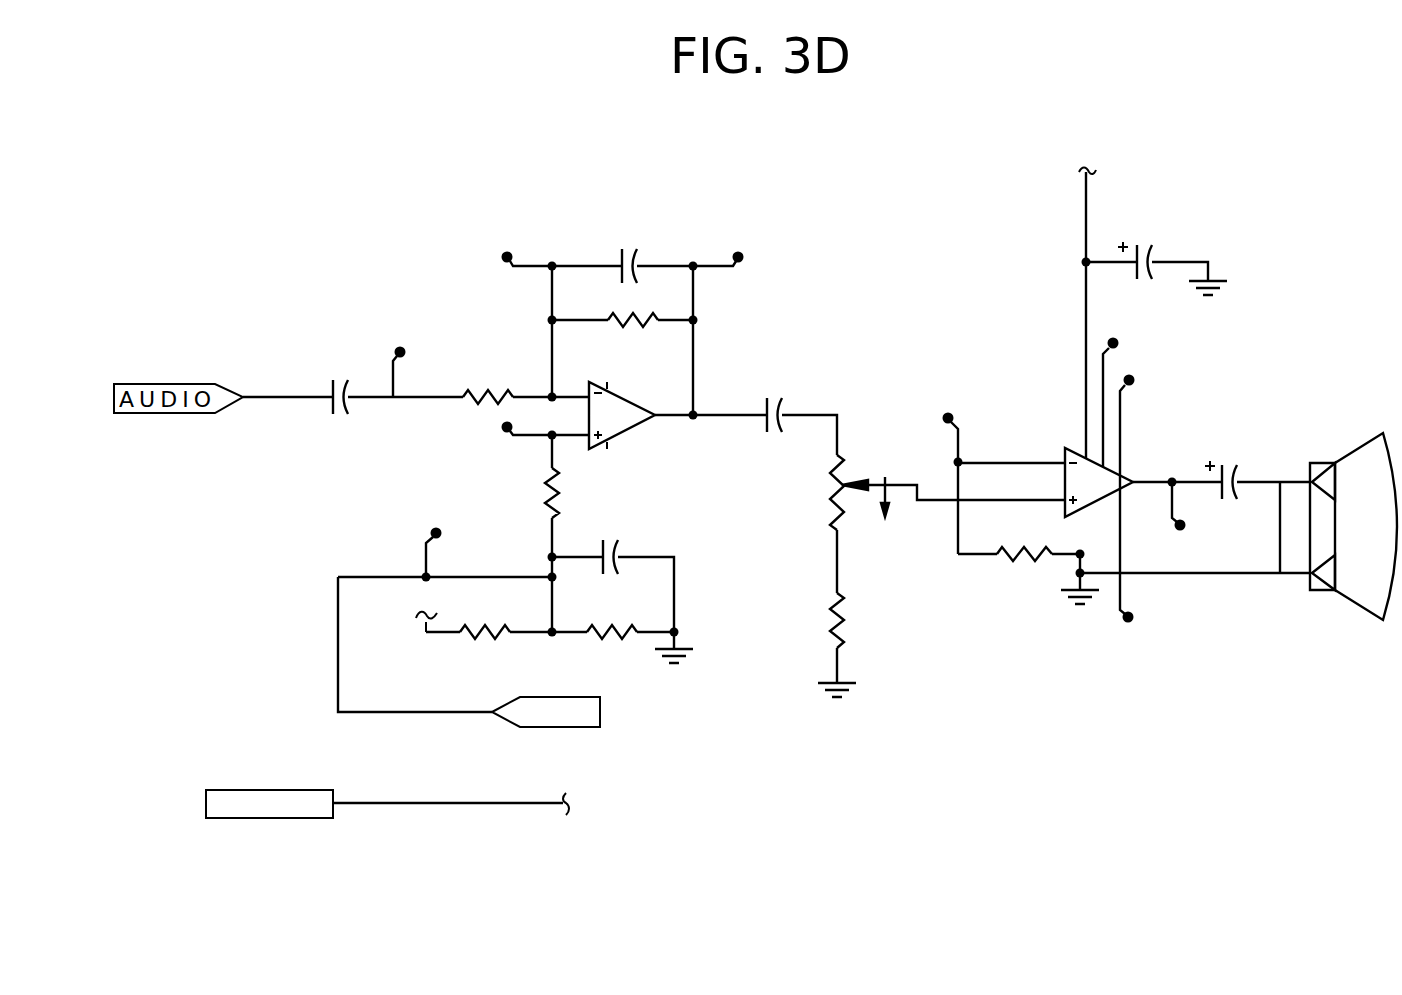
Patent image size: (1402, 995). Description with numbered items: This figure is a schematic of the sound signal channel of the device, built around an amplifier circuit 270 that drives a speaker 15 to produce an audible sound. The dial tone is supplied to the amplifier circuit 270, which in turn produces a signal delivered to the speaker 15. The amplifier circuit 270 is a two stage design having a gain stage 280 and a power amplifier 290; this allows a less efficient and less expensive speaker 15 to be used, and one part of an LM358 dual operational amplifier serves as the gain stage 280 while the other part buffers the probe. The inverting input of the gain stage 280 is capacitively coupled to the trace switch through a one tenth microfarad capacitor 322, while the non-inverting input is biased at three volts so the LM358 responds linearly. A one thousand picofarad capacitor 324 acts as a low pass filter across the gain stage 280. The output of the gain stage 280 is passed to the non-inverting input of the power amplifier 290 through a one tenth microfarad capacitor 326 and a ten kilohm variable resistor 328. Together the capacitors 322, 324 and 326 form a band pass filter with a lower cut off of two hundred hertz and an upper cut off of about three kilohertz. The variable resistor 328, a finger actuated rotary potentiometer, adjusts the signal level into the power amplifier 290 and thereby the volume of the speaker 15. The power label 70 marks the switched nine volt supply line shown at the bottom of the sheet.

The speaker 15 is at (1360, 477).
The switched 9V power supply line 70 is at (743, 768).
The amplifier circuit 270 is at (823, 212).
The gain stage 280 is at (640, 404).
The power amplifier 290 is at (1064, 451).
The capacitor 322 is at (330, 386).
The capacitor 324 is at (618, 258).
The capacitor 326 is at (780, 403).
The variable resistor 328 is at (833, 487).